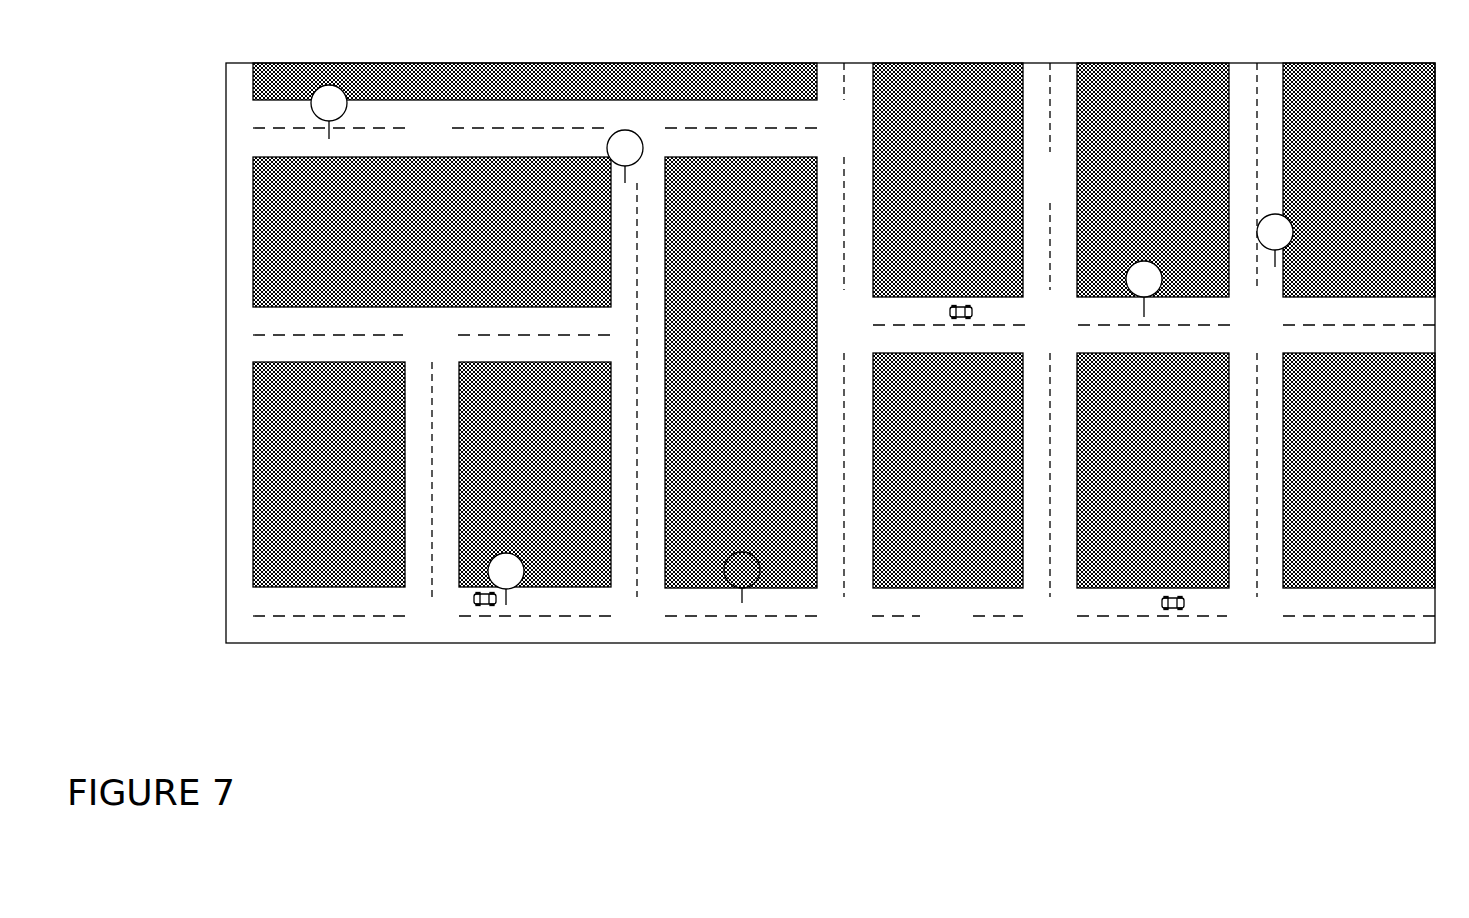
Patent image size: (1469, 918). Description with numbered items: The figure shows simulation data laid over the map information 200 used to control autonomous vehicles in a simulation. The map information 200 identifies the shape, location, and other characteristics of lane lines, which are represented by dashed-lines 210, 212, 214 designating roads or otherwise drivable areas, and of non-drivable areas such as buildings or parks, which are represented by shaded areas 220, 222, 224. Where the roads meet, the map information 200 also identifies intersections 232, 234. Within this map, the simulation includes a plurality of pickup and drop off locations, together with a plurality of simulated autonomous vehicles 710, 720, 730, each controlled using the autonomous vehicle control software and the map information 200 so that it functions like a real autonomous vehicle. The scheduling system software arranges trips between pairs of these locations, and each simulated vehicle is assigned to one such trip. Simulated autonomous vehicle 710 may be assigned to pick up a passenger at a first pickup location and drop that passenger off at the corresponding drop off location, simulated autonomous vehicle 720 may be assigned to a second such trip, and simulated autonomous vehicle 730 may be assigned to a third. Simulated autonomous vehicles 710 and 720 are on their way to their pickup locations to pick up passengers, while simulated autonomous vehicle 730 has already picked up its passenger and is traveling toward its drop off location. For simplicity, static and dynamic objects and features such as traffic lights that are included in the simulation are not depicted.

The map information 200 is at (226, 102).
The dashed-line 210 is at (535, 128).
The dashed-line 212 is at (1047, 330).
The dashed-line 214 is at (638, 616).
The intersection 232 is at (1154, 326).
The intersection 234 is at (1256, 616).
The shaded area 220 is at (329, 474).
The shaded area 222 is at (741, 372).
The shaded area 224 is at (948, 470).
The simulated autonomous vehicle 710 is at (474, 600).
The simulated autonomous vehicle 720 is at (1160, 603).
The simulated autonomous vehicle 730 is at (961, 305).